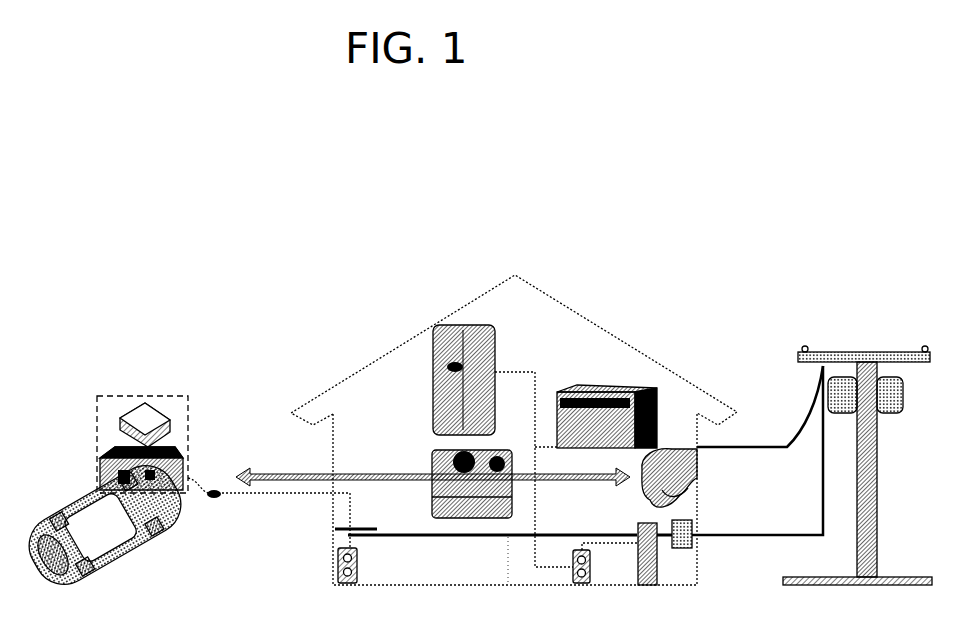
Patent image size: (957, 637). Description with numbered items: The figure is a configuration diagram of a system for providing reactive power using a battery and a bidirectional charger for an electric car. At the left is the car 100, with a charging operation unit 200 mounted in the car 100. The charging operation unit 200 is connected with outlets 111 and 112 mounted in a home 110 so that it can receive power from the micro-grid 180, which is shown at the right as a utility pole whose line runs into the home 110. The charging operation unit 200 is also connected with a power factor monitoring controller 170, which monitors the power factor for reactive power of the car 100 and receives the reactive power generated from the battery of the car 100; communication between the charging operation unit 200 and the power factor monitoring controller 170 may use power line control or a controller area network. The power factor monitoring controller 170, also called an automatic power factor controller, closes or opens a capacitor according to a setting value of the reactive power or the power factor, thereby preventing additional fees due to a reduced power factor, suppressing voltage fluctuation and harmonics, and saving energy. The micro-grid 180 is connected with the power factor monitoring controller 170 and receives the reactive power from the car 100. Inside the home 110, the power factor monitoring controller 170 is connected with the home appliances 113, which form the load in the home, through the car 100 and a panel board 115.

The car 100 is at (135, 535).
The home 110 is at (630, 347).
The outlet 111 is at (338, 563).
The outlet 112 is at (590, 570).
The home appliances 113 is at (492, 353).
The panel board 115 is at (692, 547).
The power factor monitoring controller 170 is at (697, 463).
The micro-grid 180 is at (867, 352).
The charging operation unit 200 is at (160, 395).